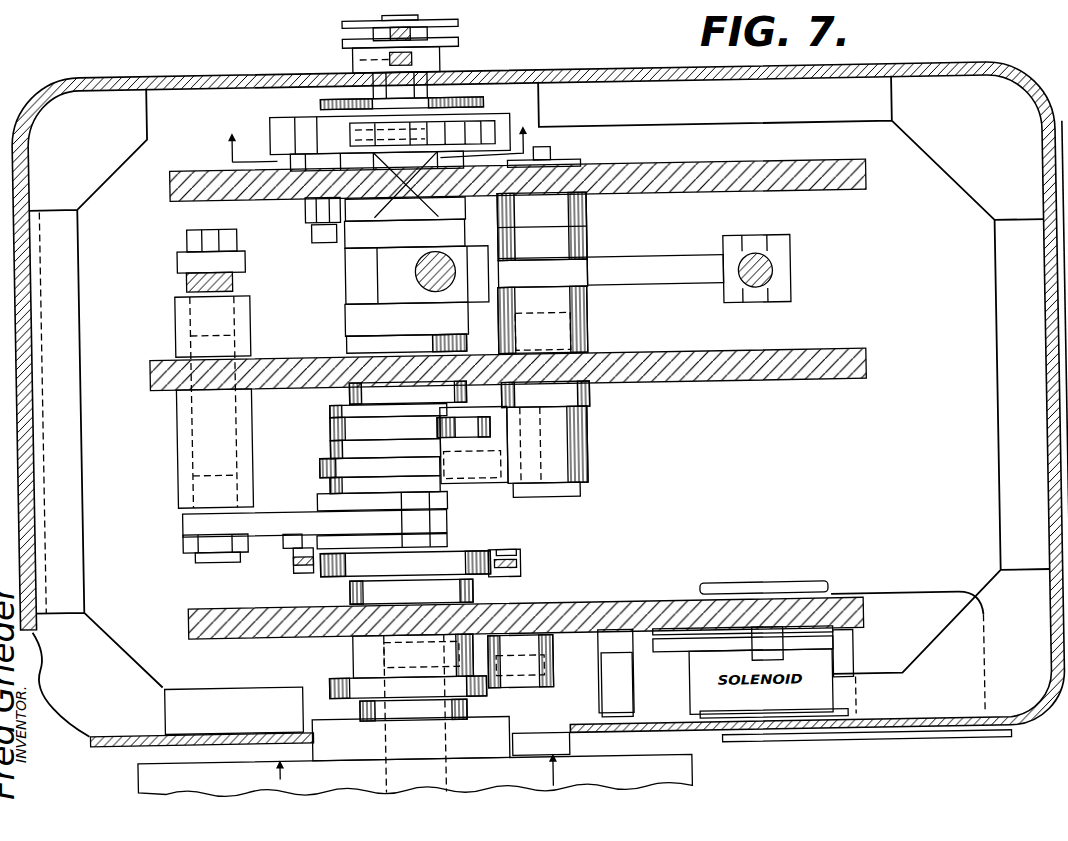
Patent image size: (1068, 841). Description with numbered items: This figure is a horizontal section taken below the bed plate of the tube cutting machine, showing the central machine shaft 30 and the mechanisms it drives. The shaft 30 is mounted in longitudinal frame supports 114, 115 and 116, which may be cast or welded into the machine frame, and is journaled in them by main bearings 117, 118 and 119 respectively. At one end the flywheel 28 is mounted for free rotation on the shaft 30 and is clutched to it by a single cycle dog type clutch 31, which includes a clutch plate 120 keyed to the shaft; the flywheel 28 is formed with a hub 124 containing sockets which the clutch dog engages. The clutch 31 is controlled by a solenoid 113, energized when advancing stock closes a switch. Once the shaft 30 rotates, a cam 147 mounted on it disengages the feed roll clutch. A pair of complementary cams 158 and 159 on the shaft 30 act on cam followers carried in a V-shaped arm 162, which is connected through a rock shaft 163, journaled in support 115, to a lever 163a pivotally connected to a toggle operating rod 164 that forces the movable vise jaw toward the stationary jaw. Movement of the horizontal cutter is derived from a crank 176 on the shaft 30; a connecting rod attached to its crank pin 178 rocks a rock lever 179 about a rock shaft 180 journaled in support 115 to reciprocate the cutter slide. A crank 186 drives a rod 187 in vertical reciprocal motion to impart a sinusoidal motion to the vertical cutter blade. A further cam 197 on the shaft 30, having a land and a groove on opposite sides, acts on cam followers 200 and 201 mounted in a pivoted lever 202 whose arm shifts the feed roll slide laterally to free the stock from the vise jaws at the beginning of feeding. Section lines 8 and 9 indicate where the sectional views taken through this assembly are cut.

The section line 8— 8 is at (377, 131).
The section line 9— 9 is at (417, 777).
The flywheel 28 is at (684, 771).
The central machine shaft 30 is at (378, 55).
The dog clutch 31 is at (352, 706).
The solenoid 113 is at (797, 706).
The longitudinal frame support 114 is at (190, 614).
The longitudinal frame support 115 is at (152, 370).
The longitudinal frame support 116 is at (176, 194).
The main bearing 117 is at (470, 592).
The main bearing 118 is at (445, 332).
The main bearing 119 is at (555, 153).
The clutch plate 120 is at (326, 682).
The hub 124 is at (514, 742).
The cam 147 is at (446, 64).
The cam 158 is at (321, 470).
The cam 159 is at (331, 428).
The V-shaped arm 162 is at (565, 448).
The rock shaft 163 is at (592, 396).
The lever 163a is at (634, 262).
The toggle operating rod 164 is at (778, 272).
The crank 176 is at (447, 542).
The crank pin 178 is at (420, 512).
The rock lever 179 is at (288, 544).
The rock shaft 180 is at (200, 453).
The crank 186 is at (356, 292).
The rod 187 is at (418, 272).
The cam 197 is at (337, 572).
The cam follower 200 is at (286, 568).
The cam follower 201 is at (518, 553).
The lever 202 is at (520, 566).